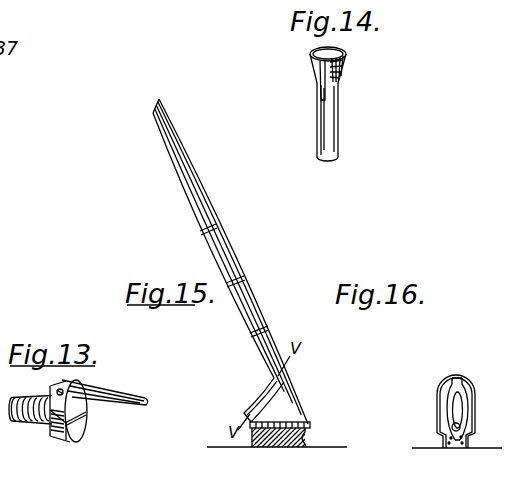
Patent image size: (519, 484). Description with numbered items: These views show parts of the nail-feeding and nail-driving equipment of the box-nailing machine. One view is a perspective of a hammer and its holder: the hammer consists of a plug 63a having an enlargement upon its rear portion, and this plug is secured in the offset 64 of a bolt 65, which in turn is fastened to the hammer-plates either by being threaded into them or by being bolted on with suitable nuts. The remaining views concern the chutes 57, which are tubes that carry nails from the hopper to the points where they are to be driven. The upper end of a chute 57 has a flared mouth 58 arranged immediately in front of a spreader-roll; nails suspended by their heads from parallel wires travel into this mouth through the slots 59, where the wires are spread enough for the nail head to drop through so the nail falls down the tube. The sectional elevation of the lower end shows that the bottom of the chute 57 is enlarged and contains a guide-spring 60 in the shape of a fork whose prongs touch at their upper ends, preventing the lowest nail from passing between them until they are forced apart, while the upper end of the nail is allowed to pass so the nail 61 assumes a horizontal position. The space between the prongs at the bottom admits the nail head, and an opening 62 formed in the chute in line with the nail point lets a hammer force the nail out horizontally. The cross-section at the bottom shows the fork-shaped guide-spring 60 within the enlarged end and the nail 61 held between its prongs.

In FIG. 14, the chute 57 is at (339, 127).
In FIG. 15, the chute 57 is at (214, 212).
In FIG. 14, the flared mouth 58 is at (345, 62).
In FIG. 14, the slot 59 is at (322, 69).
In FIG. 15, the guide-spring 60 is at (270, 400).
In FIG. 16, the guide-spring 60 is at (462, 408).
In FIG. 15, the nail 61 is at (268, 440).
In FIG. 16, the nail 61 is at (453, 427).
In FIG. 15, the opening 62 is at (309, 421).
In FIG. 13, the plug 63a is at (123, 392).
In FIG. 13, the offset 64 is at (57, 387).
In FIG. 13, the bolt 65 is at (28, 419).